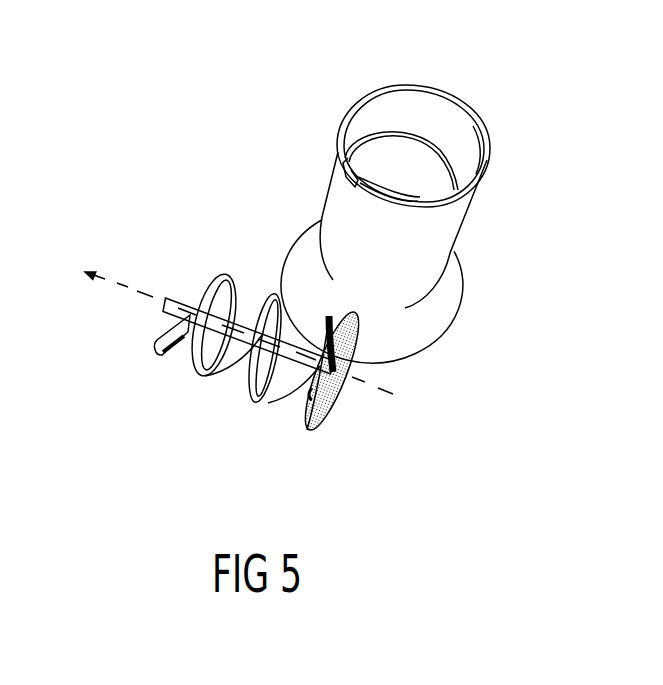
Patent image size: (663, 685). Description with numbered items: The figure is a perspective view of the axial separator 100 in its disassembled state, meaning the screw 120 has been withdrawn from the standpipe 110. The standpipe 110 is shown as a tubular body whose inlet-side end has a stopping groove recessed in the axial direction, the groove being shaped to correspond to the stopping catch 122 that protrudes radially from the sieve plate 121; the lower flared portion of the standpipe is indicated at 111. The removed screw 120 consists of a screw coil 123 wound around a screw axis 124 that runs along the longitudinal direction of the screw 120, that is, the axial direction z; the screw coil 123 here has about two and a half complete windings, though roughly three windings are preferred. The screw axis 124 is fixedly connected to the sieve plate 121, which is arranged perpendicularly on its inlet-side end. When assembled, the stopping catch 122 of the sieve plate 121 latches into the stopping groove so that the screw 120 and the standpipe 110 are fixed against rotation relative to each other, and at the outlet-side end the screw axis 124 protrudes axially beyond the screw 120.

The axial separator 100 is at (313, 88).
The standpipe 110 is at (470, 215).
The base of housing 111 is at (449, 302).
The screw 120 is at (208, 252).
The sieve plate 121 is at (340, 395).
The stopping catch 122 is at (305, 410).
The screw coil 123 is at (212, 355).
The screw axis 124 is at (160, 312).